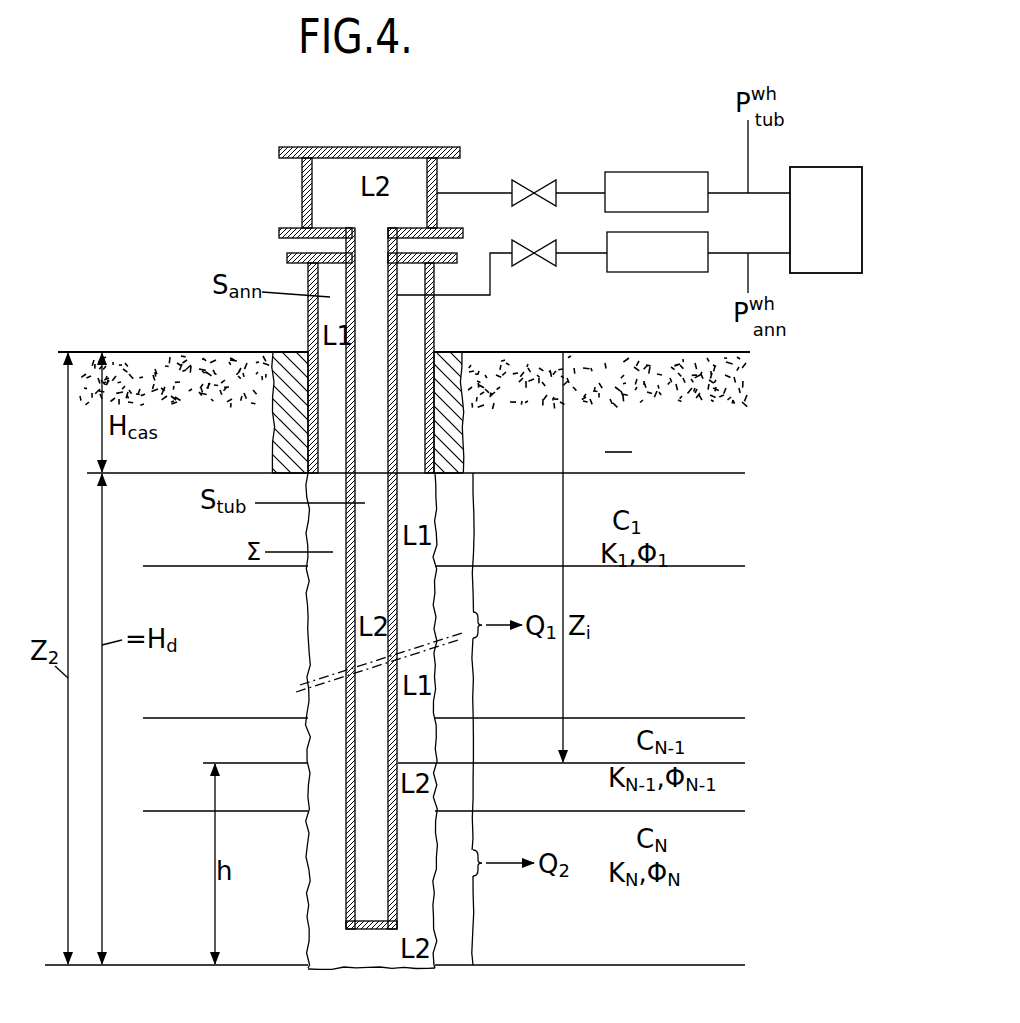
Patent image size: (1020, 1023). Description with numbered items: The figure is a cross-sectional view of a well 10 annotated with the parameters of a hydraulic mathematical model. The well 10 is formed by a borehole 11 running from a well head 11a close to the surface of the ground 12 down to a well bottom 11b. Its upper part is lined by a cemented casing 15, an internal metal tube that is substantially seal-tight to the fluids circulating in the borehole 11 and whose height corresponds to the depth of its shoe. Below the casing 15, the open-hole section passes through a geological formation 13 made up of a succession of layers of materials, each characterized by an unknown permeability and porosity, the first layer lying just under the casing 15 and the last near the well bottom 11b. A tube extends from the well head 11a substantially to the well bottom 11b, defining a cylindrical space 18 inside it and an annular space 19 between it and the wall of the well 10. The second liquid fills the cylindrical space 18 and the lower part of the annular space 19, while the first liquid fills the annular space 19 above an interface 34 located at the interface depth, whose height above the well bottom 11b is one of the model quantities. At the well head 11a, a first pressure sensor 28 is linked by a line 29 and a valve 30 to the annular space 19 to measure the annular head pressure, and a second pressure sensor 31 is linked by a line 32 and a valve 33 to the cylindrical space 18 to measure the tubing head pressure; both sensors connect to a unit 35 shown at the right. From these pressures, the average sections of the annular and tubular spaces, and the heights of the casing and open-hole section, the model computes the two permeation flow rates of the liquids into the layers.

The well 10 is at (433, 127).
The borehole 11 is at (303, 707).
The well head 11a is at (438, 334).
The well bottom 11b is at (343, 943).
The surface of the ground 12 is at (594, 350).
The geological formation 13 is at (618, 437).
The cemented casing 15 is at (446, 430).
The cylindrical space 18 is at (376, 657).
The annular space 19 is at (318, 610).
The first pressure sensor 28 is at (660, 258).
The line 29 is at (580, 256).
The valve 30 is at (537, 258).
The second pressure sensor 31 is at (663, 187).
The line 32 is at (583, 190).
The valve 33 is at (547, 184).
The interface 34 is at (333, 762).
The processing unit 35 is at (827, 274).